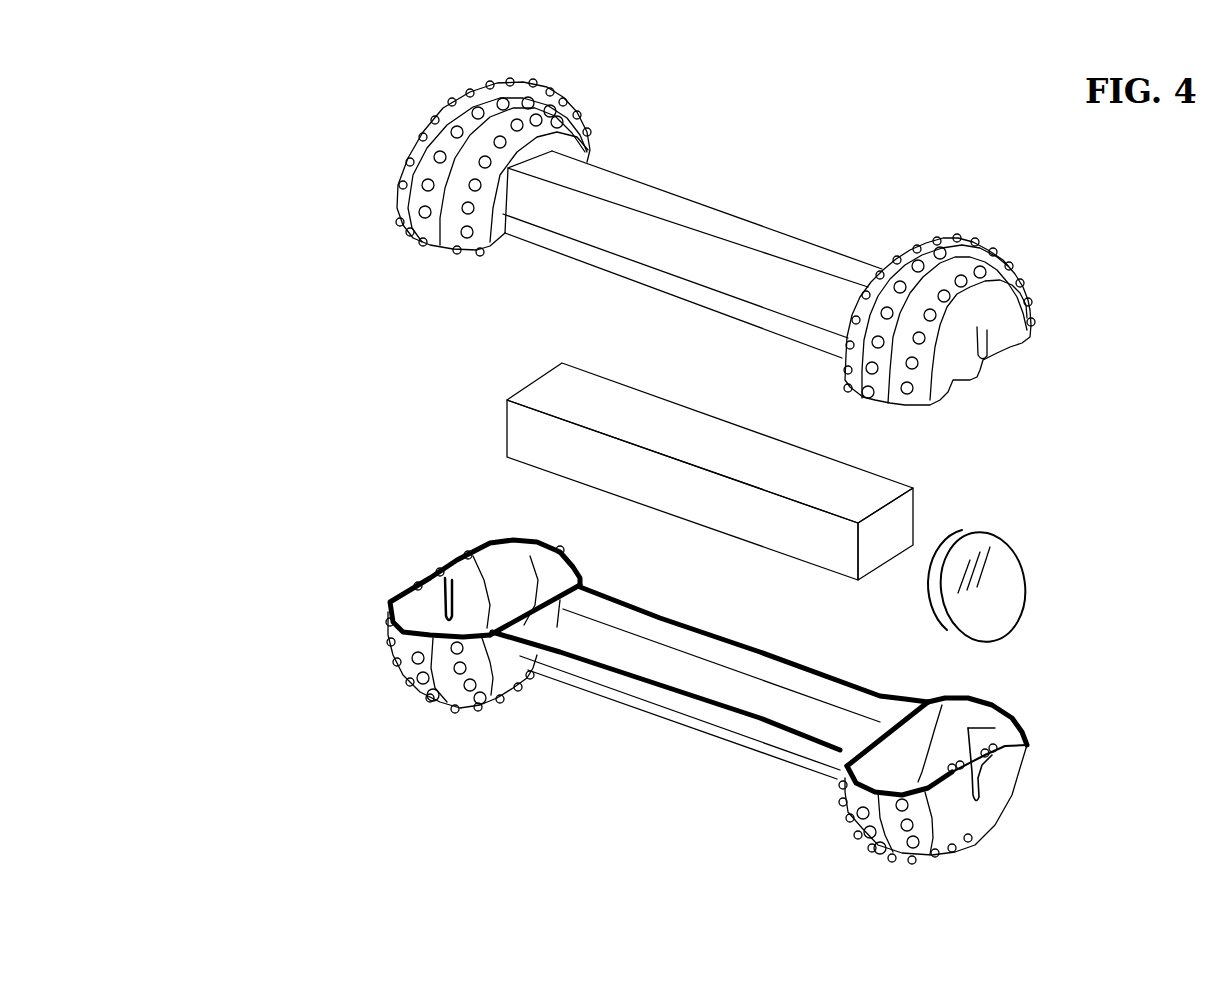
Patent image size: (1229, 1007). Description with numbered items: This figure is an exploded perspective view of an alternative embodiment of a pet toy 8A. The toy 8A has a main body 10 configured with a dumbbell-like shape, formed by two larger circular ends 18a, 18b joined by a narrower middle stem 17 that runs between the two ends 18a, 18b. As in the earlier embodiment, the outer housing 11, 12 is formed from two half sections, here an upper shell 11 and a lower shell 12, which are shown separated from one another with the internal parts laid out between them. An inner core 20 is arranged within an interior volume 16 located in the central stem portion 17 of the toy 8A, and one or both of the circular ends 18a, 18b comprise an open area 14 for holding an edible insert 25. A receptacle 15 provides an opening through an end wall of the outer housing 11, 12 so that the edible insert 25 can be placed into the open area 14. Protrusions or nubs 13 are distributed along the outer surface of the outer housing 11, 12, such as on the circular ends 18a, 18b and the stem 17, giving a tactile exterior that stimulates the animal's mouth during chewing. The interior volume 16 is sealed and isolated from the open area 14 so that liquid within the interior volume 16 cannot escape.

The toy 8A is at (238, 225).
The main body 10 is at (393, 232).
The upper shell 11 is at (405, 158).
The lower shell 12 is at (418, 699).
The protrusions or nubs 13 is at (537, 110).
The open area 14 is at (972, 722).
The receptacle 15 is at (982, 792).
The interior volume 16 is at (785, 705).
The middle stem 17 is at (672, 730).
The circular end 18a is at (1025, 285).
The circular end 18b is at (465, 707).
The inner core 20 is at (507, 413).
The edible insert 25 is at (995, 533).